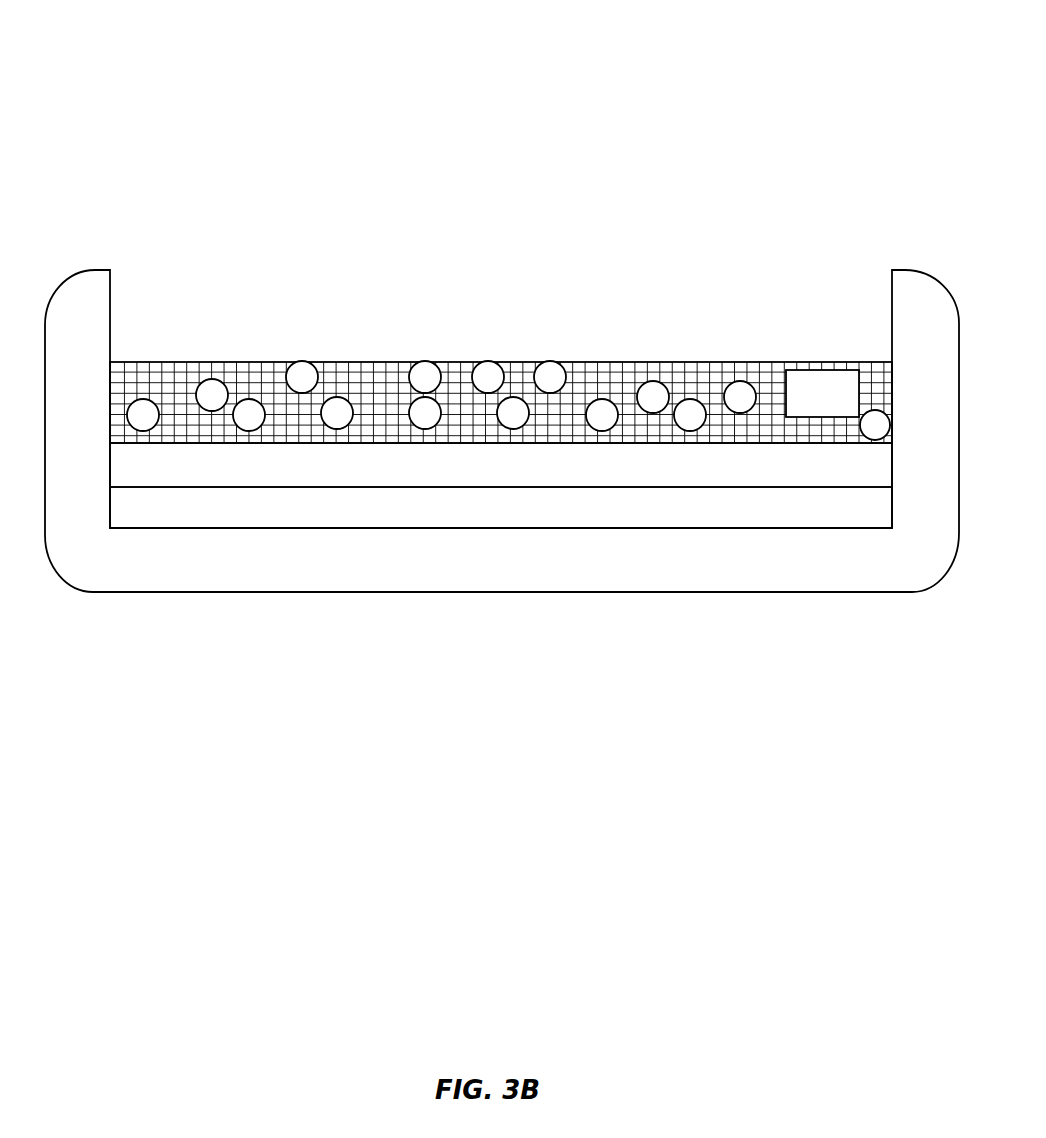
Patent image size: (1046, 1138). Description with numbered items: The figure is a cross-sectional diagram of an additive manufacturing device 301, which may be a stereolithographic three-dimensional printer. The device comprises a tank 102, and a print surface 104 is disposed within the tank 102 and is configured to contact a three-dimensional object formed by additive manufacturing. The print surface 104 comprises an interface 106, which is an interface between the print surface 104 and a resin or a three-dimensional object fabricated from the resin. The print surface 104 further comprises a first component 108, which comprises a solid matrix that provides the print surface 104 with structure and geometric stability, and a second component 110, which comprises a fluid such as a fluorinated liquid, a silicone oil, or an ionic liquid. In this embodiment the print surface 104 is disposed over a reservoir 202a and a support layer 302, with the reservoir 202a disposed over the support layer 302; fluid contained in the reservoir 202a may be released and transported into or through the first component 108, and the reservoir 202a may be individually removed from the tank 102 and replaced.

The additive manufacturing device 301 is at (140, 149).
The tank 102 is at (938, 369).
The print surface 104 is at (840, 406).
The interface 106 is at (187, 362).
The first component 108 is at (613, 380).
The second component 110 is at (302, 377).
The reservoir 202a is at (843, 478).
The support layer 302 is at (500, 516).